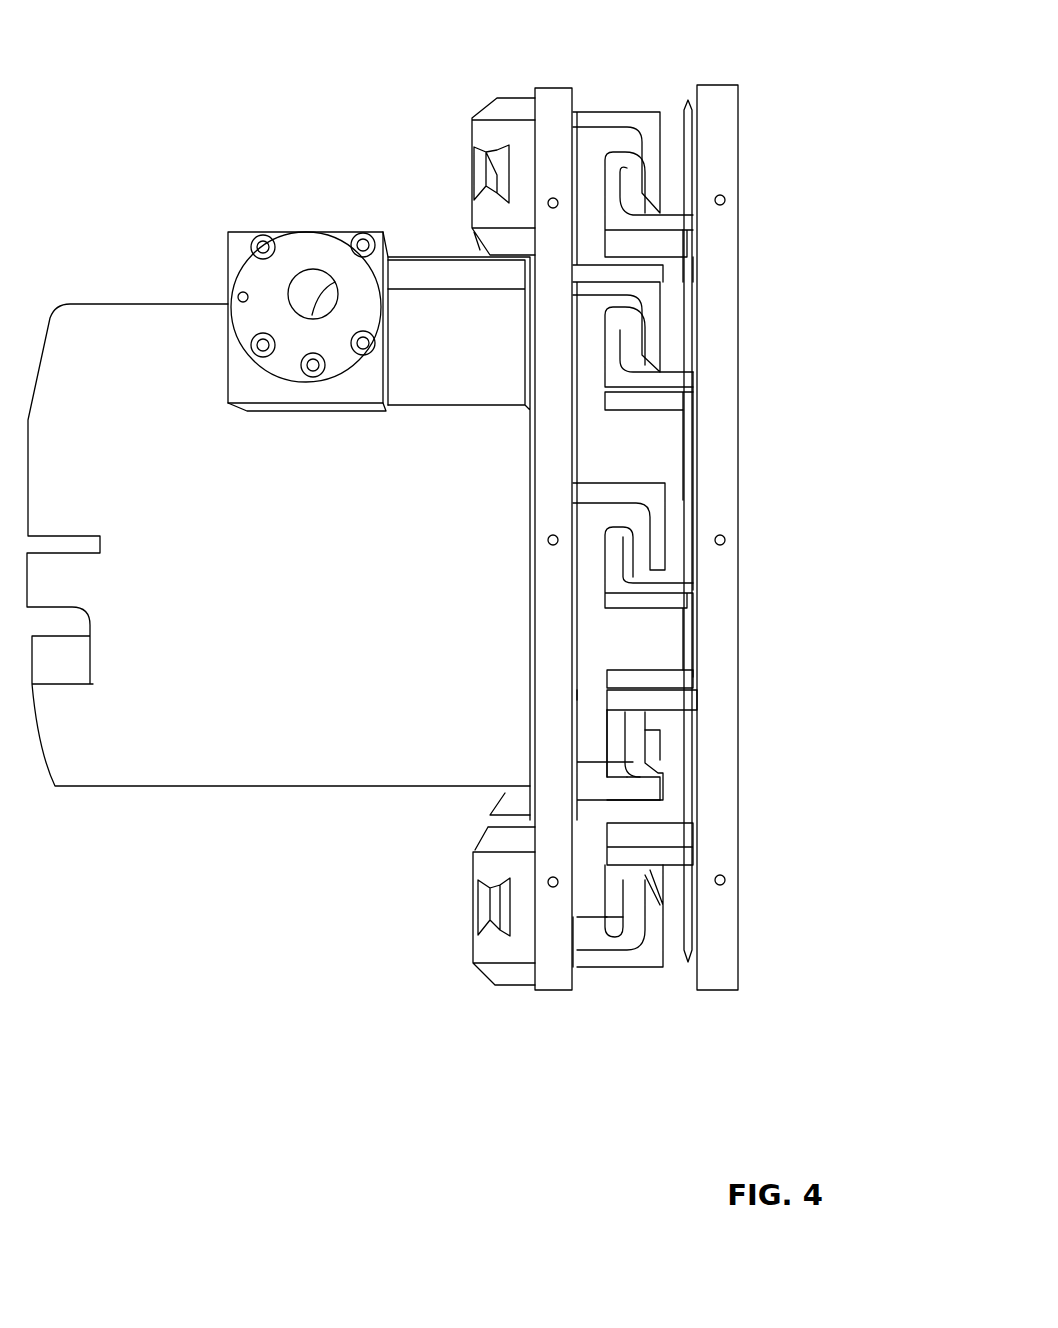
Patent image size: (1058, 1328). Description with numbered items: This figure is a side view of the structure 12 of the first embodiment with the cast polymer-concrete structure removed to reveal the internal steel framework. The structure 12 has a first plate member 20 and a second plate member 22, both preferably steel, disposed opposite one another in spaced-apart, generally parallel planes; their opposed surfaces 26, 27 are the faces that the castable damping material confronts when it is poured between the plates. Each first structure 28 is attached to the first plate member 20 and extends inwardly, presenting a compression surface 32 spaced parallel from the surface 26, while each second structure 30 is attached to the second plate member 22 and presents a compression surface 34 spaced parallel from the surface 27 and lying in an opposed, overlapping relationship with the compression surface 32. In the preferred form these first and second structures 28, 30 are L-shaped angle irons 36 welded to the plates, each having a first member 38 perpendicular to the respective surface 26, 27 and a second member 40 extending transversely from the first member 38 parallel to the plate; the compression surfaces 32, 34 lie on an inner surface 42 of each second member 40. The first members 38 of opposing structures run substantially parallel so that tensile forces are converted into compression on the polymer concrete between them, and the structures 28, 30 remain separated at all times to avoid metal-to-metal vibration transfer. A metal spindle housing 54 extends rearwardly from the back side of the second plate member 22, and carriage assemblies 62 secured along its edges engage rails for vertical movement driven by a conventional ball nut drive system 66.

The structure 12 is at (838, 122).
The first plate member 20 is at (720, 665).
The second plate member 22 is at (560, 652).
The surface 26 is at (688, 942).
The surface 27 is at (596, 920).
The first structure 28 is at (665, 220).
The second structure 30 is at (625, 118).
The compression surface 32 is at (680, 885).
The compression surface 34 is at (612, 925).
The L-shaped angle iron 36 is at (655, 378).
The first member 38 is at (652, 695).
The second member 40 is at (630, 725).
The inner surface 42 is at (655, 733).
The spindle housing 54 is at (213, 741).
The carriage assembly 62 is at (486, 135).
The ball nut drive system 66 is at (340, 262).